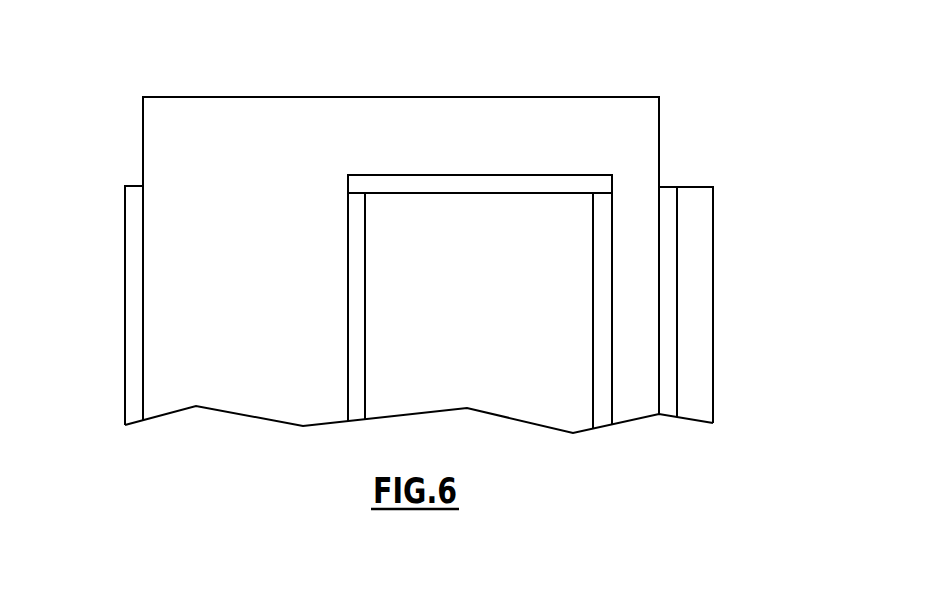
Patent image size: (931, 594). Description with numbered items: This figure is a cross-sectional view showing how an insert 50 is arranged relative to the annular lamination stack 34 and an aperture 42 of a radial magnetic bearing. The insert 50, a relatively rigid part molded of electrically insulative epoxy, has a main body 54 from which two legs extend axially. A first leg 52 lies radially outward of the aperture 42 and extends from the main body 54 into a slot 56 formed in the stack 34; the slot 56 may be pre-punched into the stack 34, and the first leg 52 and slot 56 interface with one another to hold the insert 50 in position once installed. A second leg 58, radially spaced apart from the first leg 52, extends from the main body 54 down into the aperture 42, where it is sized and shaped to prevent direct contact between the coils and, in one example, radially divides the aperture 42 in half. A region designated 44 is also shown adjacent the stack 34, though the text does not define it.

The annular lamination stack 34 is at (436, 228).
The aperture 42 is at (133, 361).
The right side frame member 44 is at (721, 262).
The insert 50 is at (418, 228).
The first leg 52 is at (638, 224).
The main body 54 is at (453, 118).
The slot 56 is at (668, 304).
The second leg 58 is at (185, 293).